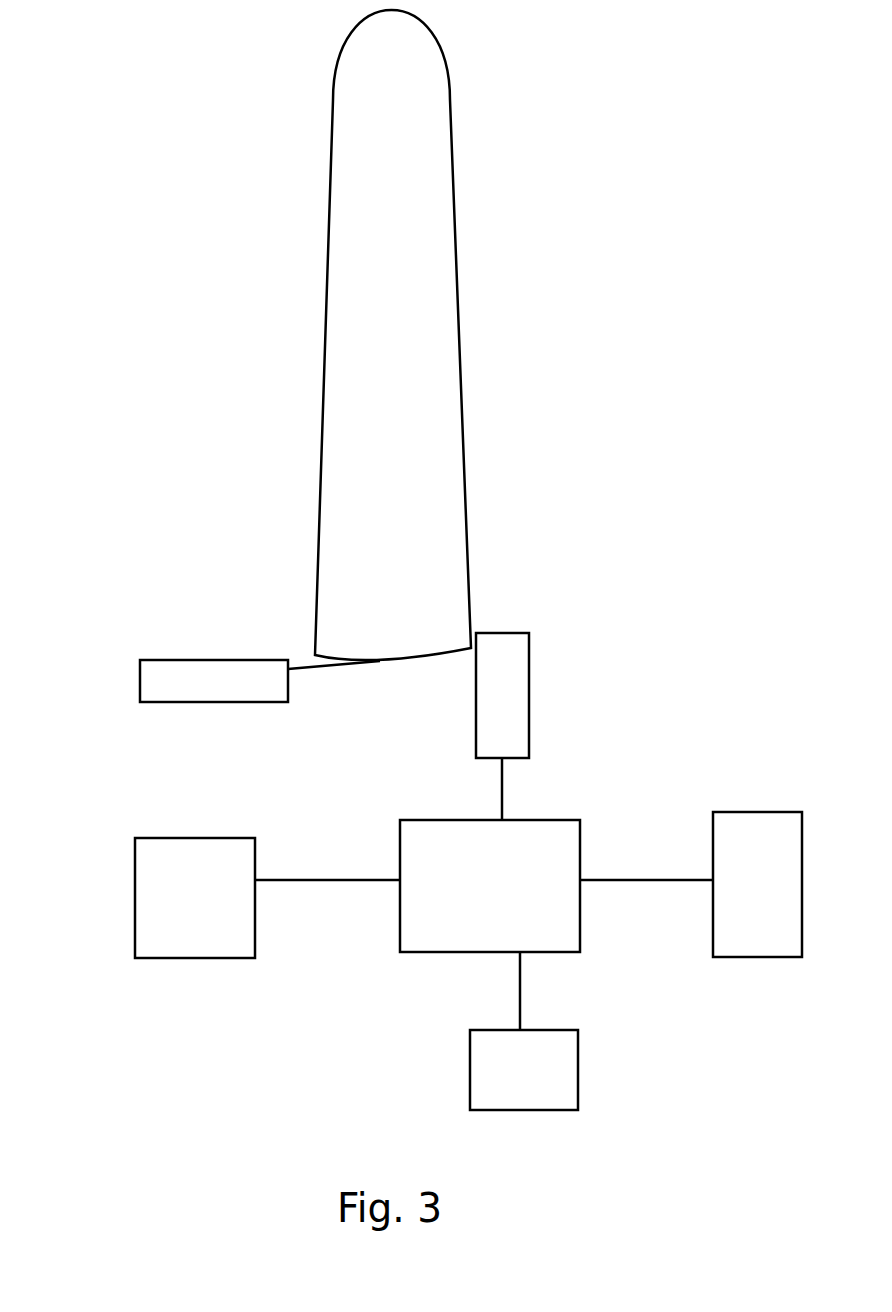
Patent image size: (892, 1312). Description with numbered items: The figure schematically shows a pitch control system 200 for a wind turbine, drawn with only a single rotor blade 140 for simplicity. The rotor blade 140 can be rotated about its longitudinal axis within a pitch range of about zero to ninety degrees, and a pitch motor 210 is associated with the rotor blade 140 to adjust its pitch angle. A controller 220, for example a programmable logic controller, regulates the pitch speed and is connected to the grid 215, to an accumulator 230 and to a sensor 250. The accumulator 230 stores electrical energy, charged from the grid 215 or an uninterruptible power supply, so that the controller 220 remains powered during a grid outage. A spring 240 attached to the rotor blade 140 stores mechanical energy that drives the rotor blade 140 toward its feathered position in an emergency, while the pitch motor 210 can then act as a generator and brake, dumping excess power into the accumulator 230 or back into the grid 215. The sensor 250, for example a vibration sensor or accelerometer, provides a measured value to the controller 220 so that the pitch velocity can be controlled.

The pitch control system 200 is at (188, 305).
The rotor blade 140 is at (420, 160).
The pitch motor 210 is at (517, 670).
The grid 215 is at (782, 897).
The controller 220 is at (500, 908).
The accumulator 230 is at (550, 1060).
The spring 240 is at (230, 690).
The sensor 250 is at (217, 904).